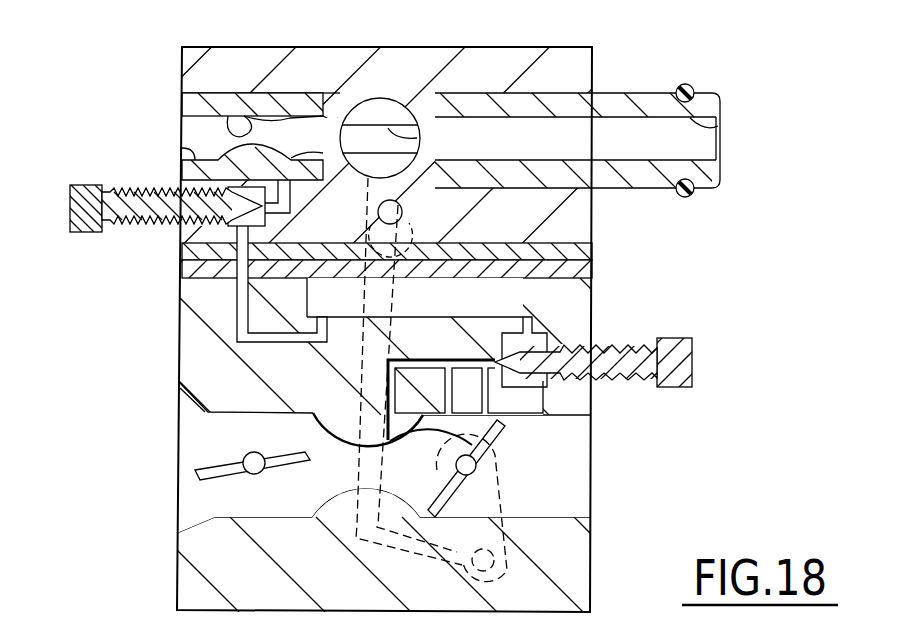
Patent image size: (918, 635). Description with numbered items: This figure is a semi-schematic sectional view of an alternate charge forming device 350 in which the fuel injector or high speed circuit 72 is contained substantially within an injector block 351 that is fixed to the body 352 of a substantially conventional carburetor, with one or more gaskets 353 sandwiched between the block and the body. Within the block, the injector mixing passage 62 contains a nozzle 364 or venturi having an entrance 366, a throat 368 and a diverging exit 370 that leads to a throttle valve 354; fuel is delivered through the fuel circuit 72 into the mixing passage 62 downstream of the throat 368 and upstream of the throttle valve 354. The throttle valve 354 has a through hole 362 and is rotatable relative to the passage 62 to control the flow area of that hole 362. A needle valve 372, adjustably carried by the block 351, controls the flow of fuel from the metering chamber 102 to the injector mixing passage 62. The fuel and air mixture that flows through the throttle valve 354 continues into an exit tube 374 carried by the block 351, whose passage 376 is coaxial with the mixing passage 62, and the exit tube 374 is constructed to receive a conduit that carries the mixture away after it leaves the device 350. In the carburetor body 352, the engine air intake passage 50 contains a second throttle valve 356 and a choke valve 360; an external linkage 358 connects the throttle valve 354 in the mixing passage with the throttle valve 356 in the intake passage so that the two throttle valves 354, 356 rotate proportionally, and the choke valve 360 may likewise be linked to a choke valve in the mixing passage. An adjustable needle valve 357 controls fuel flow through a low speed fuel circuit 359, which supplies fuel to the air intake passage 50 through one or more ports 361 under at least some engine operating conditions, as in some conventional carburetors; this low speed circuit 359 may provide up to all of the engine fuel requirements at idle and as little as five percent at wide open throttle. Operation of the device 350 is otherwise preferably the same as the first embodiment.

The engine air intake passage 50 is at (196, 418).
The injector mixing passage 62 is at (346, 96).
The fuel injector or high speed circuit 72 is at (233, 301).
The metering chamber 102 is at (525, 297).
The charge forming device 350 is at (612, 44).
The injector block 351 is at (287, 56).
The body 352 is at (195, 345).
The gasket 353 is at (588, 258).
The throttle valve 354 is at (273, 96).
The throttle valve 356 is at (480, 446).
The adjustable needle valve 357 is at (694, 363).
The external linkage 358 is at (372, 465).
The low speed fuel circuit 359 is at (428, 352).
The choke valve 360 is at (200, 458).
The port 361 is at (412, 447).
The through hole 362 is at (417, 139).
The nozzle 364 is at (200, 129).
The entrance 366 is at (182, 152).
The throat 368 is at (228, 128).
The diverging exit 370 is at (342, 170).
The needle valve 372 is at (72, 190).
The exit tube 374 is at (630, 96).
The passage 376 is at (722, 128).